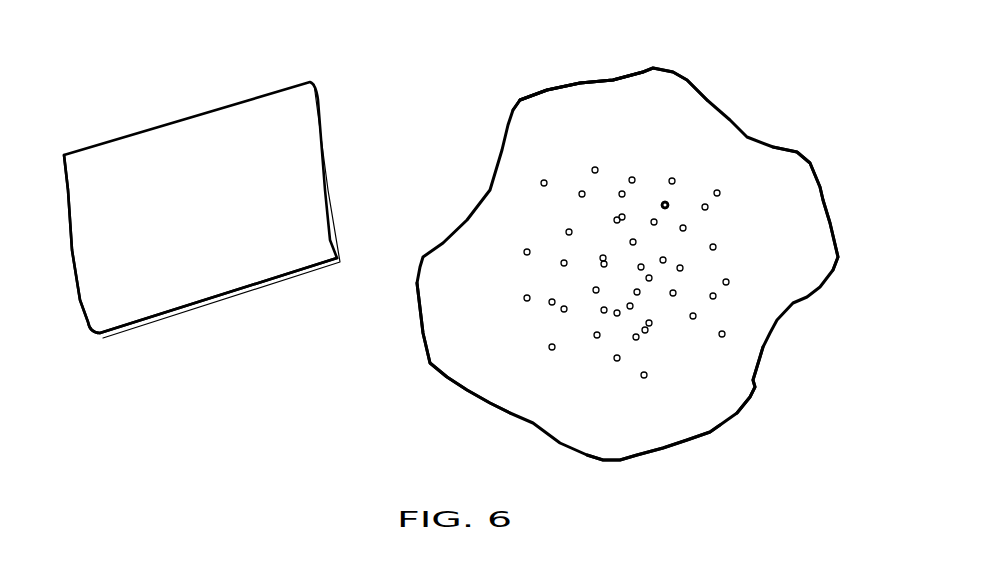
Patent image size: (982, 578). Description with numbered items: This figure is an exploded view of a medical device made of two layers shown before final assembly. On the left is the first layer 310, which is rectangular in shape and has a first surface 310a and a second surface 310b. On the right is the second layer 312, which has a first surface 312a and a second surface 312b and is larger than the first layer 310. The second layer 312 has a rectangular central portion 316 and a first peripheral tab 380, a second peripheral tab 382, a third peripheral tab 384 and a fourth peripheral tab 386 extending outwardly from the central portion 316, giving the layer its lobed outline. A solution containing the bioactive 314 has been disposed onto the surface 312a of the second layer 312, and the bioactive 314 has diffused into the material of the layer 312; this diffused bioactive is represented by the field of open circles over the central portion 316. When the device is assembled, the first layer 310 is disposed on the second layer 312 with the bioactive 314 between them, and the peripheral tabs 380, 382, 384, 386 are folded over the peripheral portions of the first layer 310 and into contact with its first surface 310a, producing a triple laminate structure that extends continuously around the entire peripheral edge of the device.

The first layer 310 is at (200, 142).
The first surface 310a is at (152, 240).
The second surface 310b is at (240, 300).
The second layer 312 is at (510, 215).
The first surface 312a is at (588, 113).
The second surface 312b is at (755, 375).
The bioactive 314 is at (633, 180).
The central portion 316 is at (660, 240).
The first peripheral tab 380 is at (577, 120).
The second peripheral tab 382 is at (788, 212).
The third peripheral tab 384 is at (648, 417).
The fourth peripheral tab 386 is at (467, 332).